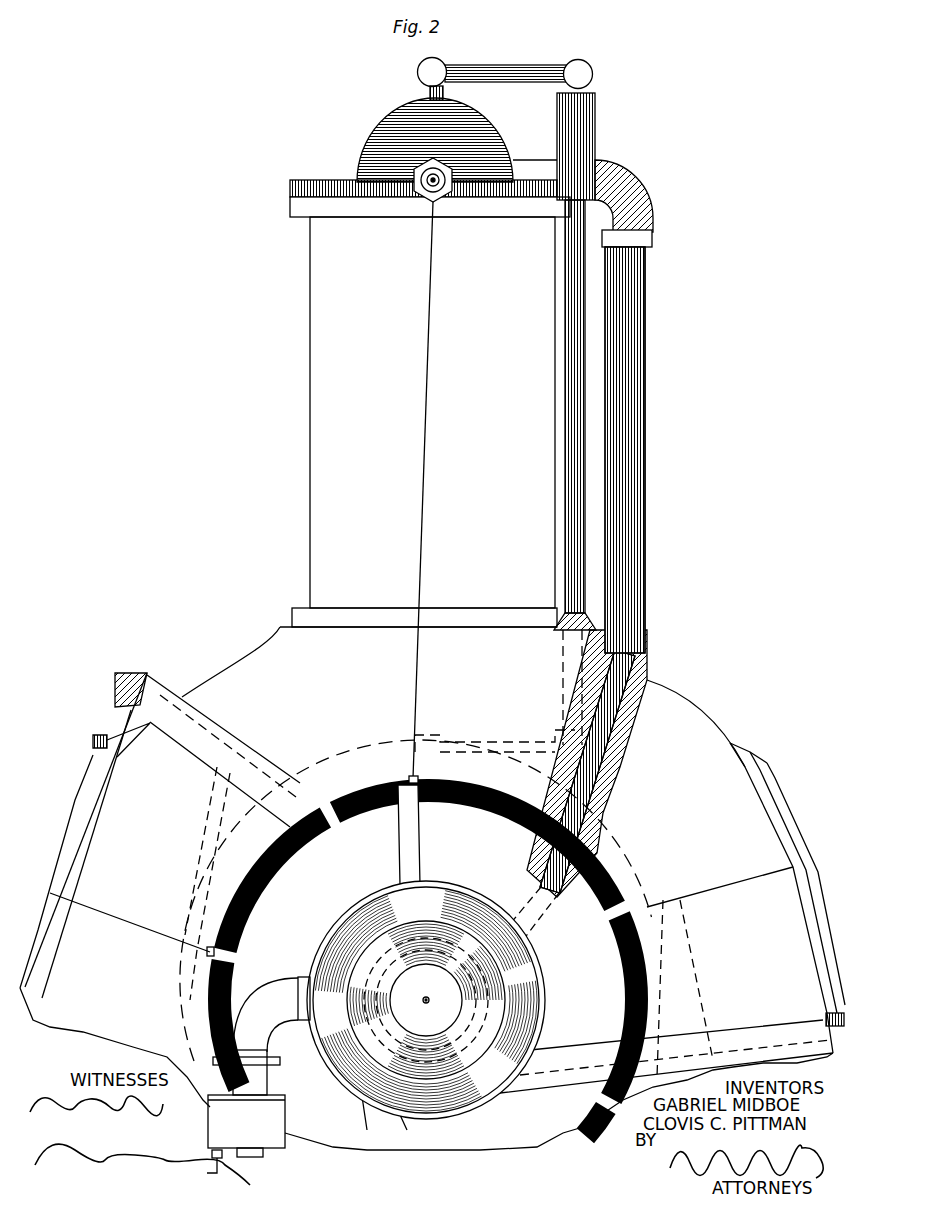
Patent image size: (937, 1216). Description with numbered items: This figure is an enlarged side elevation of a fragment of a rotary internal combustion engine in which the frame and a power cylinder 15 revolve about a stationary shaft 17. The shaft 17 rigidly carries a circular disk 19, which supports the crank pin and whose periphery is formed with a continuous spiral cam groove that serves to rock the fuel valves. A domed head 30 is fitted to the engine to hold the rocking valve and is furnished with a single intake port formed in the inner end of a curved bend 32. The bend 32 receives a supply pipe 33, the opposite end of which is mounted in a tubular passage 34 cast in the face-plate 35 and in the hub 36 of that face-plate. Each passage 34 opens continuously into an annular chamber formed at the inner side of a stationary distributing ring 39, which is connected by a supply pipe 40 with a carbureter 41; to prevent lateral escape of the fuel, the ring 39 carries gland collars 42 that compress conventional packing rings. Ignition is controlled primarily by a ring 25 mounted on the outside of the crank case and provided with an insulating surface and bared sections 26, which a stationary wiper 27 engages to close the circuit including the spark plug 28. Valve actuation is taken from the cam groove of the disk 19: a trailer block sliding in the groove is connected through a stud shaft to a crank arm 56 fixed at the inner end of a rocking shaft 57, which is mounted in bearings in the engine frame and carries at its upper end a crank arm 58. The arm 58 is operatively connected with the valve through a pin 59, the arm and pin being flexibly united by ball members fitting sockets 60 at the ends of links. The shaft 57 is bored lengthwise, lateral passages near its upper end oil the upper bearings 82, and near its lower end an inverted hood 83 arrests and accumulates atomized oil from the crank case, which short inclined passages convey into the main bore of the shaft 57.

The power cylinder 15 is at (309, 455).
The stationary shaft 17 is at (426, 1000).
The circular disk 19 is at (345, 774).
The ring 25 is at (461, 806).
The bared sections 26 is at (382, 795).
The stationary wiper 27 is at (421, 850).
The spark plug 28 is at (430, 202).
The domed head 30 is at (382, 150).
The bend 32 is at (626, 195).
The supply pipe 33 is at (631, 458).
The tubular passage 34 is at (229, 746).
The face-plate 35 is at (681, 718).
The hub 36 is at (600, 1052).
The distributing ring 39 is at (340, 941).
The supply pipe 40 is at (265, 1030).
The carbureter 41 is at (278, 1113).
The gland collars 42 is at (362, 926).
The crank arm 56 is at (511, 749).
The rocking shaft 57 is at (567, 475).
The crank arm 58 is at (516, 70).
The pin 59 is at (444, 93).
The sockets 60 is at (418, 67).
The upper bearings 82 is at (596, 135).
The inverted hood 83 is at (563, 622).